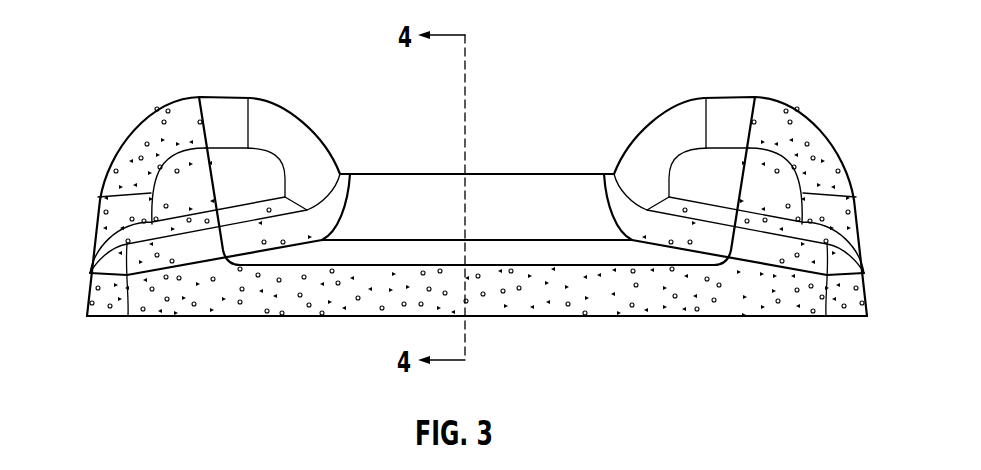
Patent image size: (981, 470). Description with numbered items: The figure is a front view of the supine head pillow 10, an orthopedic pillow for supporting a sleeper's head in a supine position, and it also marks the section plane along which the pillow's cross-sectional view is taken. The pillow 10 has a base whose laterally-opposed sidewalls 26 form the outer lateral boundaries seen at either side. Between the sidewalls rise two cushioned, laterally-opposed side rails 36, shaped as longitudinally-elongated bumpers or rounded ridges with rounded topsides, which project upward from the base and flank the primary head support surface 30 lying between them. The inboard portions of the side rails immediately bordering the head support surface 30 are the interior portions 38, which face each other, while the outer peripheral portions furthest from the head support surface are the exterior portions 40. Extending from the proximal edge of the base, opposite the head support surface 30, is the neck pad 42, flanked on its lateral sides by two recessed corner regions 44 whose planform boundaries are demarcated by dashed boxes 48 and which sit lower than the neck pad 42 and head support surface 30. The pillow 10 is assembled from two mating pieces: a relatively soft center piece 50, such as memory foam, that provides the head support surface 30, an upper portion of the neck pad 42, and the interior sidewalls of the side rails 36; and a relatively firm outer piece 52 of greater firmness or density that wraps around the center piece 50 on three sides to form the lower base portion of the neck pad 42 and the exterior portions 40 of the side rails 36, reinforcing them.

The supine head pillow 10 is at (116, 66).
The laterally-opposed sidewalls 26 is at (90, 281).
The head support surface 30 is at (423, 174).
The laterally-opposed side rails 36 is at (232, 99).
The interior portions 38 is at (323, 134).
The exterior portions 40 is at (118, 148).
The neck pad 42 is at (554, 322).
The recessed corner regions 44 is at (163, 246).
The dashed boxes 48 is at (290, 258).
The relatively soft center piece 50 is at (508, 182).
The relatively firm outer piece 52 is at (197, 309).